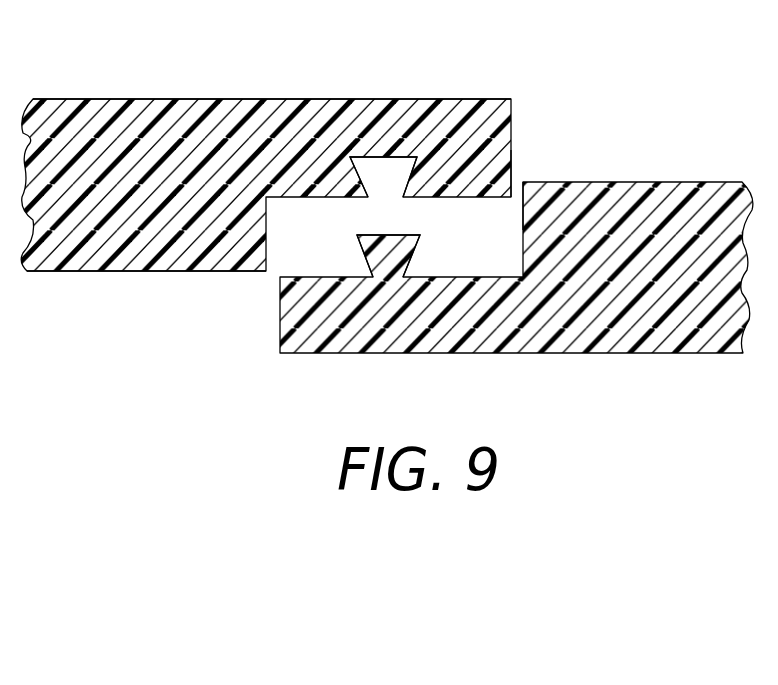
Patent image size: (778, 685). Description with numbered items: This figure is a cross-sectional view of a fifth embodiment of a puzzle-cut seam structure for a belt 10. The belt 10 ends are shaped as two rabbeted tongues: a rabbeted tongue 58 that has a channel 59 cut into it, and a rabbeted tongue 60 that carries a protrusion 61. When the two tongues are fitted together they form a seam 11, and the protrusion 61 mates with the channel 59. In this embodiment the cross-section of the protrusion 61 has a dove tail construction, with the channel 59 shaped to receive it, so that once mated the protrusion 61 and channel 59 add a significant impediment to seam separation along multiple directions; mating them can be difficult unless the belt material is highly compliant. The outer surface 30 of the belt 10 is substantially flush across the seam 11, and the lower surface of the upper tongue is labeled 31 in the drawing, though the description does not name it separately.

The belt 10 is at (672, 68).
The seam 11 is at (519, 174).
The outer surface 30 is at (183, 99).
The lower surface of first panel 31 is at (185, 271).
The rabbeted tongue 58 is at (407, 99).
The channel 59 is at (383, 175).
The rabbeted tongue 60 is at (425, 353).
The protrusion 61 is at (412, 256).